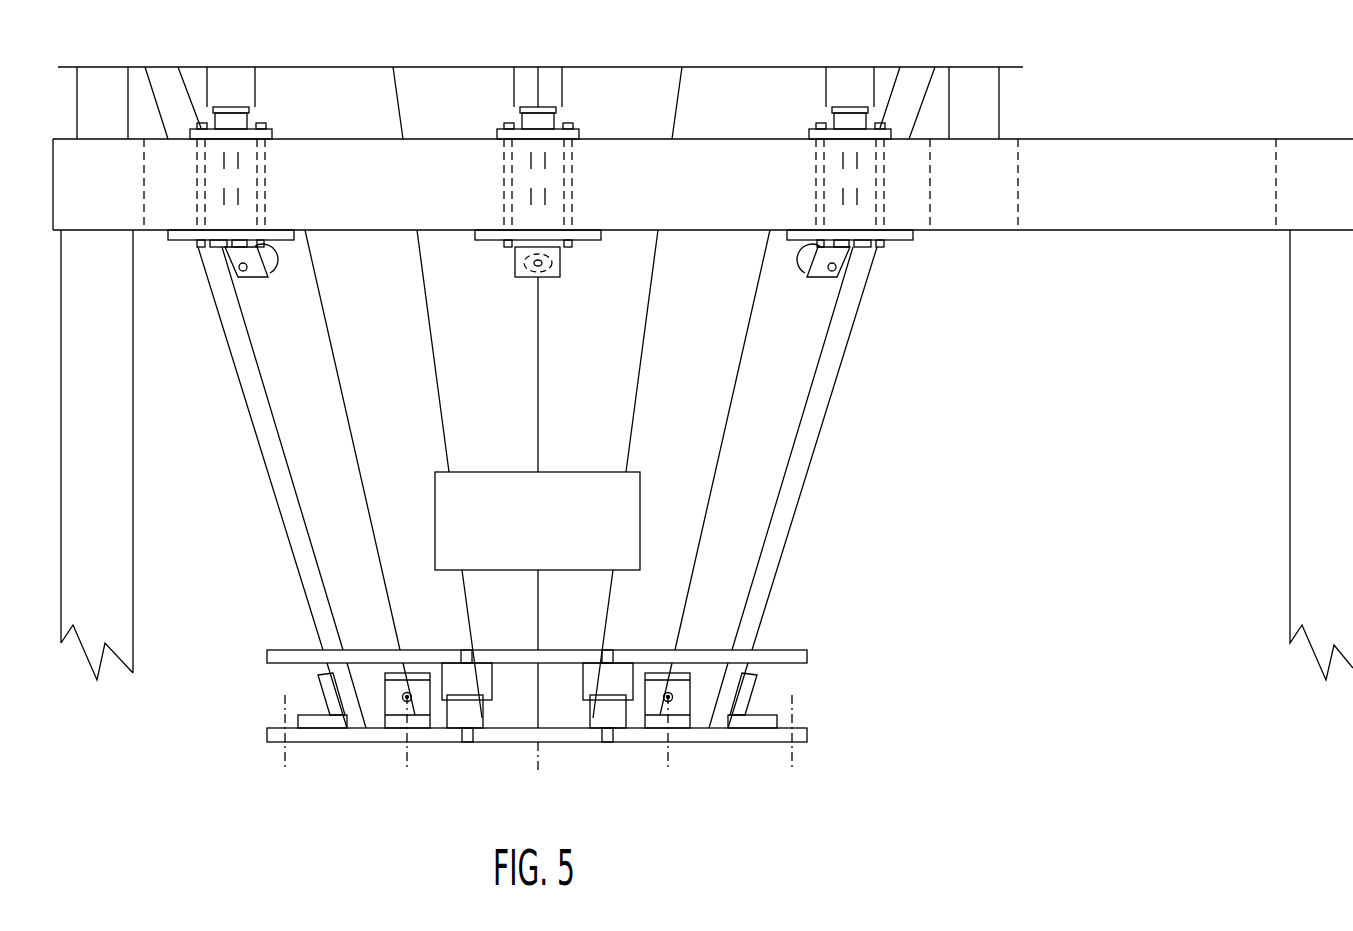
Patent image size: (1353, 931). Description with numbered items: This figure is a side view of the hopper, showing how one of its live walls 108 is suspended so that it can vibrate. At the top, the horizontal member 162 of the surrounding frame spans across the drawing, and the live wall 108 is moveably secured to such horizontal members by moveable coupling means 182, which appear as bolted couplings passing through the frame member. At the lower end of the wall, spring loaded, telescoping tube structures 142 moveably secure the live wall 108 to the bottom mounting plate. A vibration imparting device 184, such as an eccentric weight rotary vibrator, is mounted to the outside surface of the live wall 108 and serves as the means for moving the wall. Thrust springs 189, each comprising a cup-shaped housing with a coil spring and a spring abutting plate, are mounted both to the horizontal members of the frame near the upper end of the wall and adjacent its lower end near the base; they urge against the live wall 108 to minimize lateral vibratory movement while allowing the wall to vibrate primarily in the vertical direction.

The live wall 108 is at (495, 431).
The spring loaded, telescoping tube structure 142 is at (466, 687).
The horizontal member 162 is at (412, 206).
The moveable coupling means 182 is at (237, 83).
The vibration imparting device 184 is at (558, 488).
The thrust spring 189 is at (270, 276).